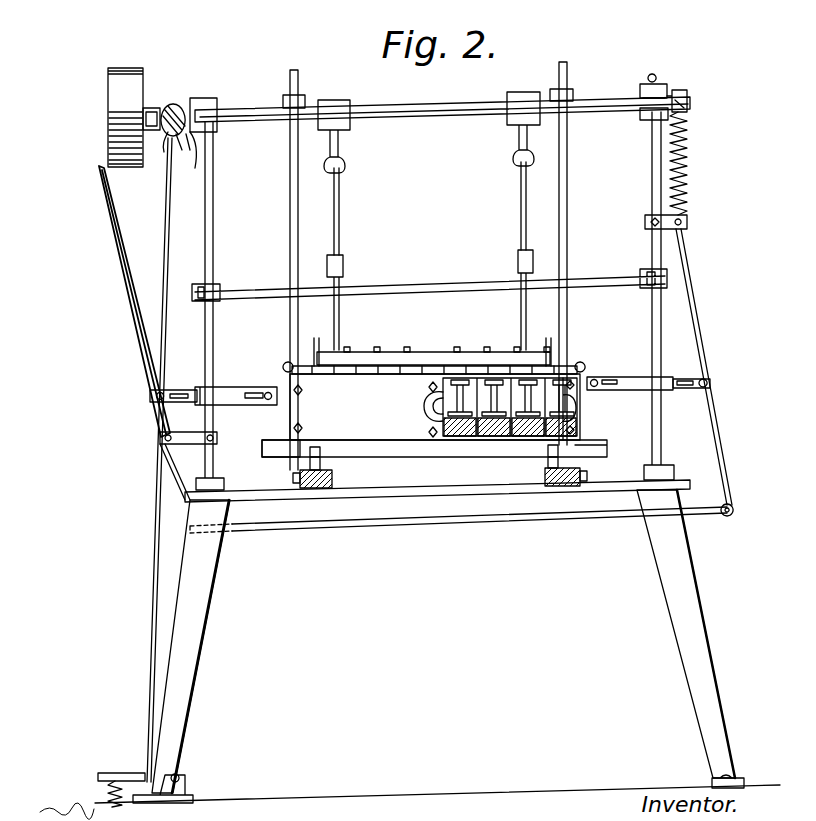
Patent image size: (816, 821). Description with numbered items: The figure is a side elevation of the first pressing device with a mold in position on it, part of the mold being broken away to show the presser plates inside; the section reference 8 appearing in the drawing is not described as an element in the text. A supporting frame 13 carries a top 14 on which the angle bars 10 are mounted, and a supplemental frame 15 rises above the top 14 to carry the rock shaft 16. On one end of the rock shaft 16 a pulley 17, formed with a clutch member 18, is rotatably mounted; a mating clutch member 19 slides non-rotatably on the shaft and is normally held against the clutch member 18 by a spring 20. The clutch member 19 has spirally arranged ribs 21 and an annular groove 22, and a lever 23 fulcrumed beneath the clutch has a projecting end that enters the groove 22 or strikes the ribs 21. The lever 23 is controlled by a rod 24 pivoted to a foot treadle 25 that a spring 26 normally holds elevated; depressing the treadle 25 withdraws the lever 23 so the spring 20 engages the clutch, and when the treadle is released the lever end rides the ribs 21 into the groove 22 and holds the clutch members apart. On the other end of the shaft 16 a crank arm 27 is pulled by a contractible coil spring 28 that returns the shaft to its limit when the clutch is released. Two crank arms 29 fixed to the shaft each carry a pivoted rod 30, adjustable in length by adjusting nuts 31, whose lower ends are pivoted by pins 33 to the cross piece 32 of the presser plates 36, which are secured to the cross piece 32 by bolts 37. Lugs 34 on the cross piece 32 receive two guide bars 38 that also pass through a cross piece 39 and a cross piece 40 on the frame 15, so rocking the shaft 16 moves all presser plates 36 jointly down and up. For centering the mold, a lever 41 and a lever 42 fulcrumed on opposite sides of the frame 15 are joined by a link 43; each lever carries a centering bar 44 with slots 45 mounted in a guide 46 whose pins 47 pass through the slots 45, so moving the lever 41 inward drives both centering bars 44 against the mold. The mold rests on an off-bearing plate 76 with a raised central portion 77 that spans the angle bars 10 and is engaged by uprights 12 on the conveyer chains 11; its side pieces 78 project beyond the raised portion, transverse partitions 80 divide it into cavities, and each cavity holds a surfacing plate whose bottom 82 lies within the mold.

The bolt 8 is at (303, 409).
The angle bars 10 is at (312, 490).
The conveyer chains 11 is at (556, 478).
The uprights 12 is at (322, 462).
The supporting frame 13 is at (195, 628).
The top 14 is at (420, 503).
The supplemental frame 15 is at (213, 348).
The rock shaft 16 is at (455, 115).
The pulley 17 is at (125, 117).
The clutch member 18 is at (155, 108).
The mating clutch member 19 is at (178, 105).
The spring 20 is at (212, 100).
The spirally arranged ribs 21 is at (183, 150).
The annular groove 22 is at (165, 148).
The lever 23 is at (195, 170).
The rod 24 is at (152, 523).
The foot treadle 25 is at (125, 773).
The spring 26 is at (107, 792).
The crank arm 27 is at (689, 103).
The contractible coil spring 28 is at (686, 162).
The crank arms 29 is at (343, 160).
The rods 30 is at (341, 226).
The adjusting nuts 31 is at (343, 266).
The cross piece 32 is at (428, 352).
The pins 33 is at (316, 338).
The lugs 34 is at (292, 370).
The presser plates 36 is at (576, 415).
The bolts 37 is at (400, 350).
The guide bars 38 is at (290, 220).
The cross piece 39 is at (424, 285).
The cross piece 40 is at (592, 100).
The lever 41 is at (180, 472).
The lever 42 is at (700, 365).
The link 43 is at (624, 515).
The centering bar 44 is at (236, 402).
The slots 45 is at (186, 400).
The guide 46 is at (228, 395).
The pins 47 is at (162, 393).
The off-bearing plate 76 is at (401, 457).
The raised central portion 77 is at (300, 440).
The side pieces 78 is at (435, 407).
The transverse partitions 80 is at (503, 425).
The bottom 82 is at (462, 436).